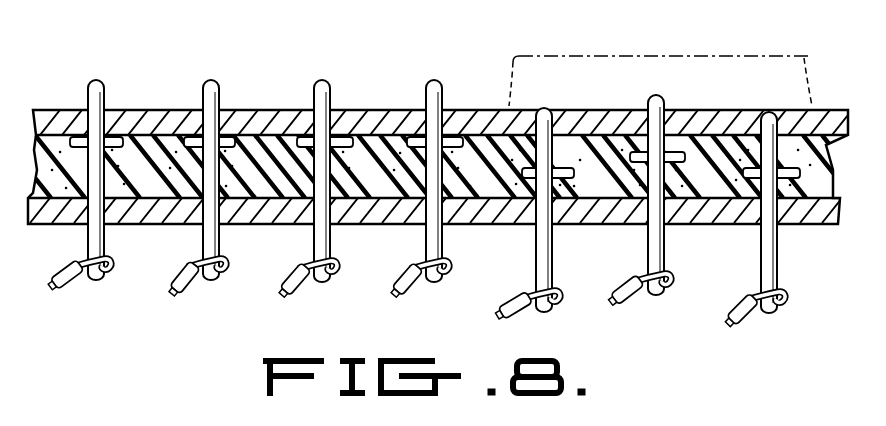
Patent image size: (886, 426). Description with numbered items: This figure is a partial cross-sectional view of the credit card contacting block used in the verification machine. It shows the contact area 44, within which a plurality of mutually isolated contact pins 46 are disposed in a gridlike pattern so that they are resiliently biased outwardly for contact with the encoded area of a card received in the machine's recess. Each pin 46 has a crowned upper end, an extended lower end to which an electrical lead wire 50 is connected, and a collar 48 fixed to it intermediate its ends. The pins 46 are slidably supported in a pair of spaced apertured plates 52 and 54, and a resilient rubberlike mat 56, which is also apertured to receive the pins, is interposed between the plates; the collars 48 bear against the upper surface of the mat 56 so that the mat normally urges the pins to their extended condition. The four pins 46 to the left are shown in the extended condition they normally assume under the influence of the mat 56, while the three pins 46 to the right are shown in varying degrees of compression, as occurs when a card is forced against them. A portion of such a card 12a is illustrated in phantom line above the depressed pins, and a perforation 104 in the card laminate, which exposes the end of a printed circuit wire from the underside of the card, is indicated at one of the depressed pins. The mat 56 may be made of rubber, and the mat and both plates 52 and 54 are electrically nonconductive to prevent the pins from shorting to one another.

The portion of a card 12a is at (533, 57).
The contact area 44 is at (152, 98).
The contact pins 46 is at (100, 82).
The collar 48 is at (73, 135).
The lead wires 50 is at (50, 288).
The apertured plate 52 is at (820, 114).
The apertured plate 54 is at (825, 214).
The resilient rubberlike mat 56 is at (254, 150).
The perforations 104 is at (650, 94).